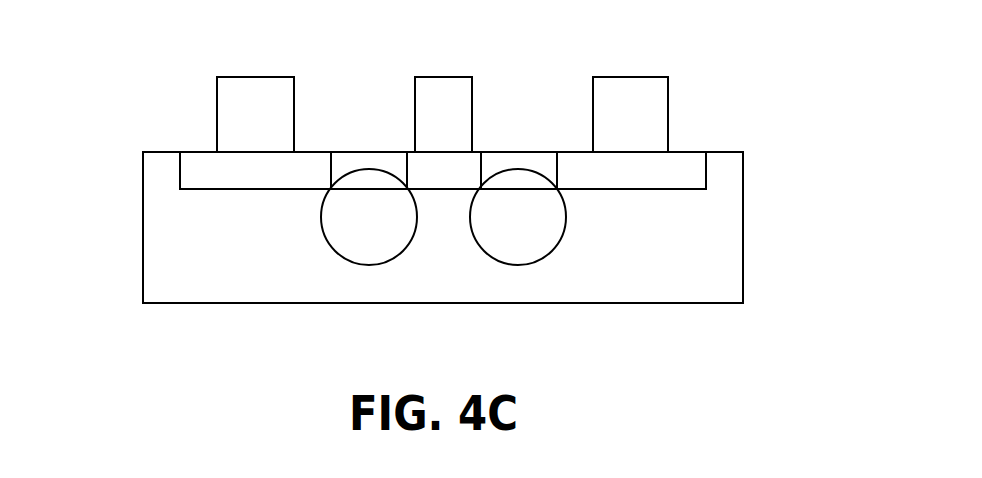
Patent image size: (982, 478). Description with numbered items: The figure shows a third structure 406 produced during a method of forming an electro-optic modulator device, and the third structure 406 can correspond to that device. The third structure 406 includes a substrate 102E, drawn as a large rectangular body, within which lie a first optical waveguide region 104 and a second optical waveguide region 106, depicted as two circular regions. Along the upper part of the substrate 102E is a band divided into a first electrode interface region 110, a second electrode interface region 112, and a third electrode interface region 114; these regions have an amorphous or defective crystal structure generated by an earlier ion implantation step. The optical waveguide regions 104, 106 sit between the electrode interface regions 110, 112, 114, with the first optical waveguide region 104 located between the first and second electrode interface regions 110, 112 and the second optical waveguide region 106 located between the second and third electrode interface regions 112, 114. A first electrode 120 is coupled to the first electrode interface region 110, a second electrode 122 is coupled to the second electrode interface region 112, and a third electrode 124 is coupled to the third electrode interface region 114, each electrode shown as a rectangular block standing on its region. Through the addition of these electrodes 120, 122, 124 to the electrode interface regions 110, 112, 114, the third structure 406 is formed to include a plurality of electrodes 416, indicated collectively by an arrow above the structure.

The substrate 102E is at (743, 230).
The third structure 406 is at (125, 190).
The first electrode interface region 110 is at (202, 150).
The second electrode interface region 112 is at (408, 150).
The third electrode interface region 114 is at (575, 150).
The first electrode 120 is at (255, 77).
The second electrode 122 is at (443, 77).
The third electrode 124 is at (630, 77).
The first optical waveguide region 104 is at (324, 228).
The second optical waveguide region 106 is at (563, 228).
The plurality of electrodes 416 is at (722, 110).